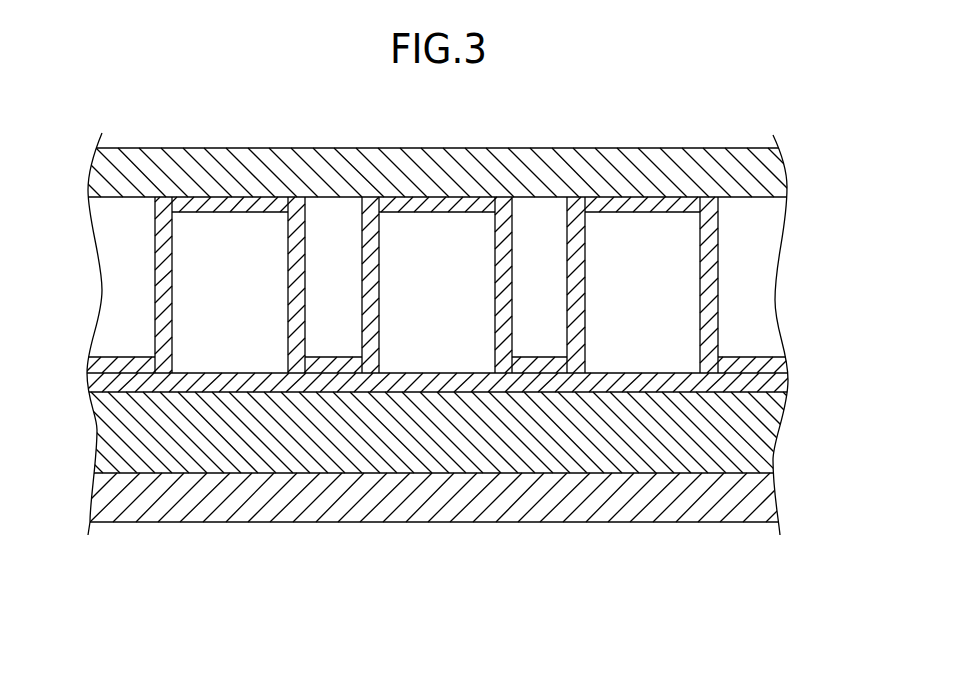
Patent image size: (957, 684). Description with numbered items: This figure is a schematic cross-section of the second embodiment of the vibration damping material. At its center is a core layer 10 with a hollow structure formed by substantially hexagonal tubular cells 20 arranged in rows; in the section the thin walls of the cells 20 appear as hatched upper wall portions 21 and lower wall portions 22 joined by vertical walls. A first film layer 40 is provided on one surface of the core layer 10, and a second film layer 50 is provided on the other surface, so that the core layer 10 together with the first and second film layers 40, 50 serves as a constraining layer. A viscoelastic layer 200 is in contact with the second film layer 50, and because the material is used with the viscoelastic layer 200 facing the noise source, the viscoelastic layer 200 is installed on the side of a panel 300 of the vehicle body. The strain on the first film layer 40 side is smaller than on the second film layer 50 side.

The core layer 10 is at (784, 283).
The cells 20 is at (200, 258).
The upper portion of thin film 21 is at (228, 192).
The lower portion of thin film 22 is at (229, 365).
The first film layer 40 is at (775, 170).
The second film layer 50 is at (778, 382).
The viscoelastic layer 200 is at (768, 411).
The panel 300 is at (775, 497).